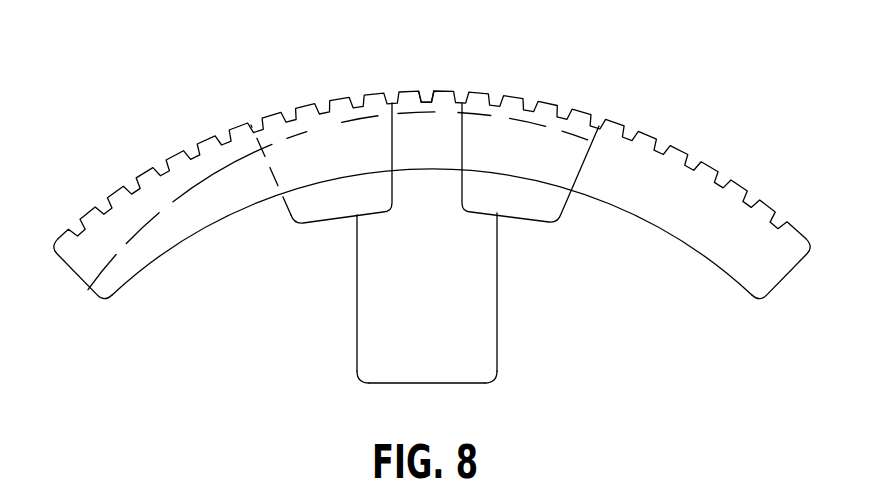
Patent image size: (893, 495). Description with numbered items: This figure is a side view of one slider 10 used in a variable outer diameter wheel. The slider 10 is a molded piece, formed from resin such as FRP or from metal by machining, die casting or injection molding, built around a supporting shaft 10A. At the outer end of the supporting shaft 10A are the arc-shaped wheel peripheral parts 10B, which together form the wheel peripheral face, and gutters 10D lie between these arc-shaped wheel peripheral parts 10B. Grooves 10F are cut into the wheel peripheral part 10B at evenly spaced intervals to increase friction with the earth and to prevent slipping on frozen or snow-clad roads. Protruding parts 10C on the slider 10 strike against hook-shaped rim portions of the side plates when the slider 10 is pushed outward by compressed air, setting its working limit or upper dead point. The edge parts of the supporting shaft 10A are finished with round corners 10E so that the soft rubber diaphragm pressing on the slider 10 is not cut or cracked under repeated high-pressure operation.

The slider 10 is at (60, 175).
The supporting shaft 10A is at (480, 327).
The arc-shaped wheel peripheral part 10B is at (122, 197).
The protruding part 10C is at (338, 207).
The gutter 10D is at (323, 123).
The round corner 10E is at (360, 380).
The groove 10F is at (423, 100).